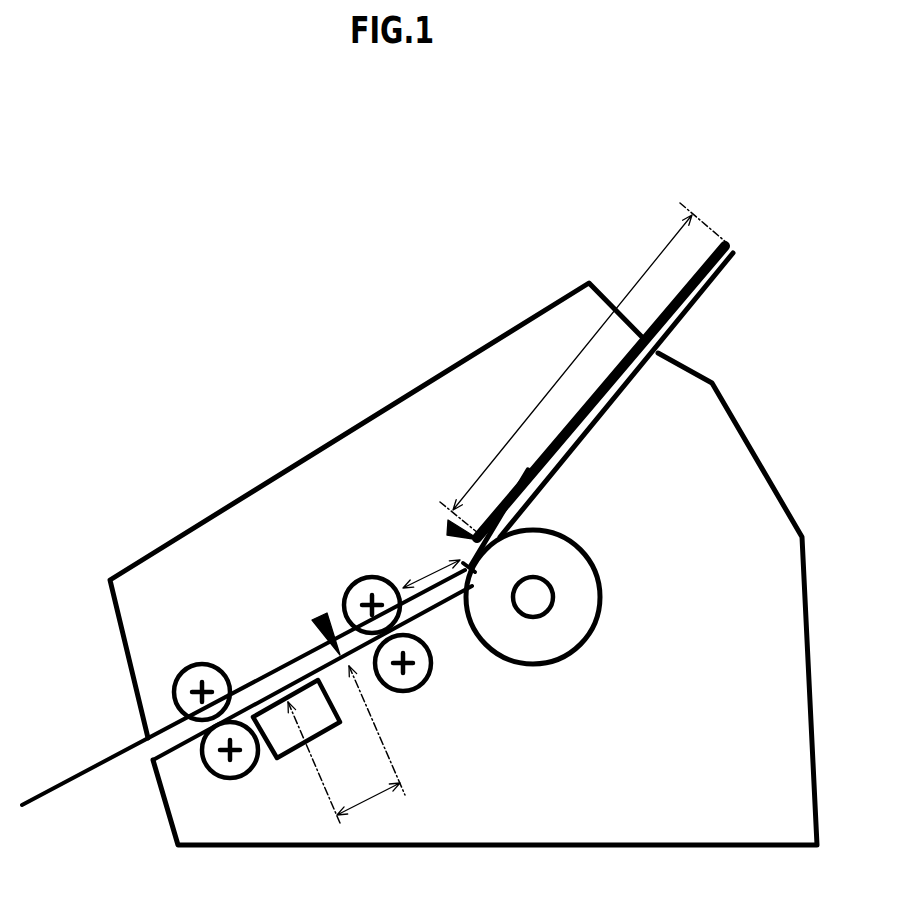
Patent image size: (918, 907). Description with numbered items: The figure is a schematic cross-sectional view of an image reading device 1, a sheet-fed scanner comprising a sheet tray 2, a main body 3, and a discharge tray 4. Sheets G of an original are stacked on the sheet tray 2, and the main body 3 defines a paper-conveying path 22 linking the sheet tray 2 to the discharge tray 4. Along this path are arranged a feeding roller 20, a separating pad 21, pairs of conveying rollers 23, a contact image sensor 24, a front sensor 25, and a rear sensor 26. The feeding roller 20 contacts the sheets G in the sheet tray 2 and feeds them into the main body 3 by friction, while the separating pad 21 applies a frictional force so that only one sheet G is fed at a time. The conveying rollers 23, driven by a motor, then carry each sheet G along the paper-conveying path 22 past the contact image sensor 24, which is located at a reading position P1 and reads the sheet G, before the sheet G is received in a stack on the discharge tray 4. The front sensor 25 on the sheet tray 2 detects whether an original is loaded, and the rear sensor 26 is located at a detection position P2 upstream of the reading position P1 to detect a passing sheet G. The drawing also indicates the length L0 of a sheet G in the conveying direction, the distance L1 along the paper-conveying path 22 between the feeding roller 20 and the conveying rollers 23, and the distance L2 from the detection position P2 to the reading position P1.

The image reading device 1 is at (482, 261).
The sheet tray 2 is at (715, 287).
The main body 3 is at (372, 410).
The discharge tray 4 is at (60, 795).
The sheet G is at (692, 307).
The feeding roller 20 is at (587, 612).
The separating pad 21 is at (522, 468).
The paper-conveying path 22 is at (278, 667).
The conveying rollers 23 is at (220, 768).
The contact image sensor 24 is at (283, 738).
The front sensor 25 is at (455, 537).
The rear sensor 26 is at (327, 615).
The length of the sheet L0 is at (583, 368).
The distance between the feeding roller and the conveying rollers L1 is at (431, 565).
The distance from the detection position to the reading position L2 is at (368, 806).
The reading position P1 is at (315, 762).
The detection position P2 is at (379, 730).